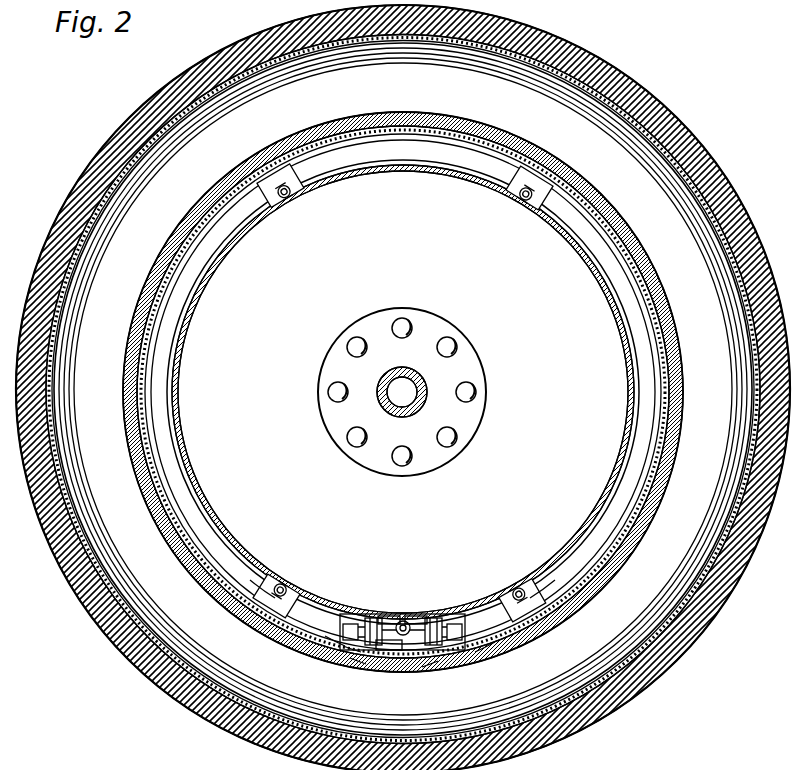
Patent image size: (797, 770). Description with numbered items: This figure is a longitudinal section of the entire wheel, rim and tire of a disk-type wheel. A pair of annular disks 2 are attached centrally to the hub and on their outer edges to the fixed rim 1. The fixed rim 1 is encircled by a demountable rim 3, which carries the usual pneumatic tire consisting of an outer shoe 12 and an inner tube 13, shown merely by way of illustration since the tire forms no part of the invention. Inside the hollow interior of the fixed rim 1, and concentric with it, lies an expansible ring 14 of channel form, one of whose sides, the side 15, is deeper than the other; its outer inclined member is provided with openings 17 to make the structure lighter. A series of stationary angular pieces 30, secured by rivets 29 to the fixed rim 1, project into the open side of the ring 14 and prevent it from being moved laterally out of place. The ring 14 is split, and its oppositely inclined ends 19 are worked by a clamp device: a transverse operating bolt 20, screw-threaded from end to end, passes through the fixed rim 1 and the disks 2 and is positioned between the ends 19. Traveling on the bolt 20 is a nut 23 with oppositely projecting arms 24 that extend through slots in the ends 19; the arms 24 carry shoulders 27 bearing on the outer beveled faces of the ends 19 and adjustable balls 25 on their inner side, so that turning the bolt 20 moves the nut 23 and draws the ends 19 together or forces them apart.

The fixed rim 1 is at (189, 312).
The annular disks 2 is at (440, 392).
The demountable rim 3 is at (450, 130).
The outer shoe 12 is at (665, 668).
The inner tube 13 is at (568, 704).
The expansible ring 14 is at (352, 648).
The side of ring 15 is at (262, 578).
The openings 17 is at (335, 640).
The ends of ring 19 is at (357, 665).
The operating bolt 20 is at (404, 620).
The nut 23 is at (398, 662).
The arms 24 is at (375, 622).
The balls 25 is at (352, 626).
The shoulders 27 is at (436, 600).
The rivets 29 is at (292, 193).
The angular pieces 30 is at (300, 181).